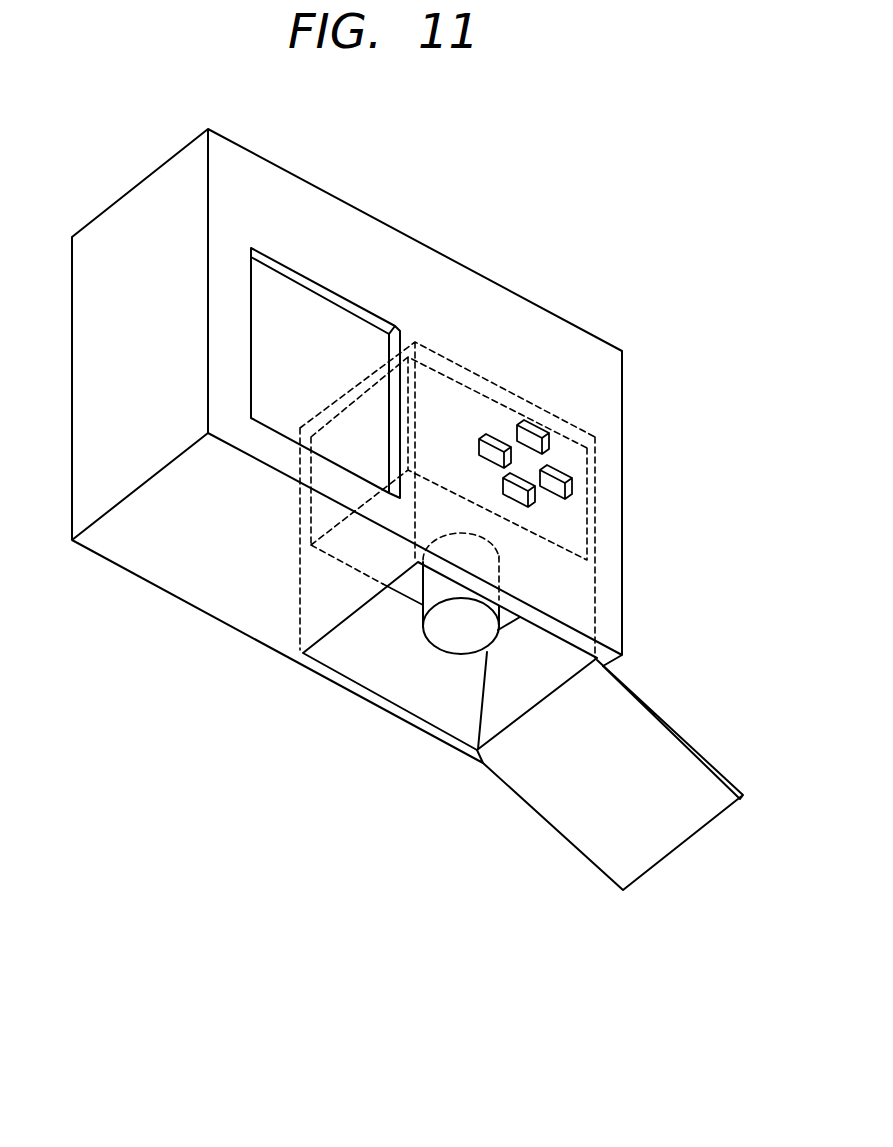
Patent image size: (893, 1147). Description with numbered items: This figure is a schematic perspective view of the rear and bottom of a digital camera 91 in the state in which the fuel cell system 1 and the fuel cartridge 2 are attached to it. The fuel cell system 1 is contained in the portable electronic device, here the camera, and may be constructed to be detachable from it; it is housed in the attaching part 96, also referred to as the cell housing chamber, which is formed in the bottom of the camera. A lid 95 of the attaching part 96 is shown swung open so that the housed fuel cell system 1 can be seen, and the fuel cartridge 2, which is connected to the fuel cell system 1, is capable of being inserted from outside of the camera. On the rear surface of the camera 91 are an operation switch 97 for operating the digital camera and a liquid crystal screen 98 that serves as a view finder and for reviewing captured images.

The fuel cell system 1 is at (537, 578).
The fuel cartridge 2 is at (453, 632).
The housing 91 is at (540, 325).
The lid 95 is at (653, 845).
The attaching part 96 is at (345, 640).
The operation switch 97 is at (557, 475).
The liquid crystal screen 98 is at (304, 318).